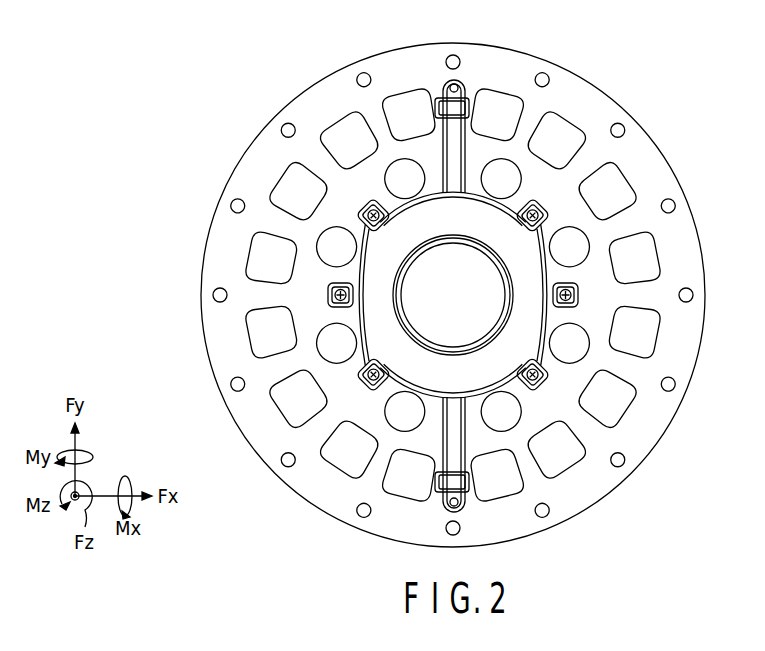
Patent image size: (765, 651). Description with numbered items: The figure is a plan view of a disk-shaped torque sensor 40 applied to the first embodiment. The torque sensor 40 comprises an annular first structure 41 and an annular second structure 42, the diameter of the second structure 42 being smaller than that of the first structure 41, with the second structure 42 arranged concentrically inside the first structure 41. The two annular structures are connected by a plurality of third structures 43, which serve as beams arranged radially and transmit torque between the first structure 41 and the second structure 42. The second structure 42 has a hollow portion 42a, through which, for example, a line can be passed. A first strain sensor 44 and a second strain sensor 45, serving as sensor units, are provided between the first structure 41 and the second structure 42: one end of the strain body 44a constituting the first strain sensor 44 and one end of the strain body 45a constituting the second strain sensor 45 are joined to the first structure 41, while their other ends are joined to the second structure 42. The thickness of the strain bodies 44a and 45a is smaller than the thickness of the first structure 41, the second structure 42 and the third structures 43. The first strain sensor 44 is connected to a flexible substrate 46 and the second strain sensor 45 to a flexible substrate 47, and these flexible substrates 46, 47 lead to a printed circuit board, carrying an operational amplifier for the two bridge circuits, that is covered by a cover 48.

The torque sensor 40 is at (492, 42).
The first structure 41 is at (260, 155).
The second structure 42 is at (308, 267).
The hollow portion 42a is at (432, 304).
The third structures 43 is at (280, 367).
The first strain sensor 44 is at (423, 101).
The strain body 44a is at (470, 107).
The second strain sensor 45 is at (484, 484).
The strain body 45a is at (438, 485).
The flexible substrate 46 is at (456, 158).
The flexible substrate 47 is at (453, 437).
The cover 48 is at (525, 260).